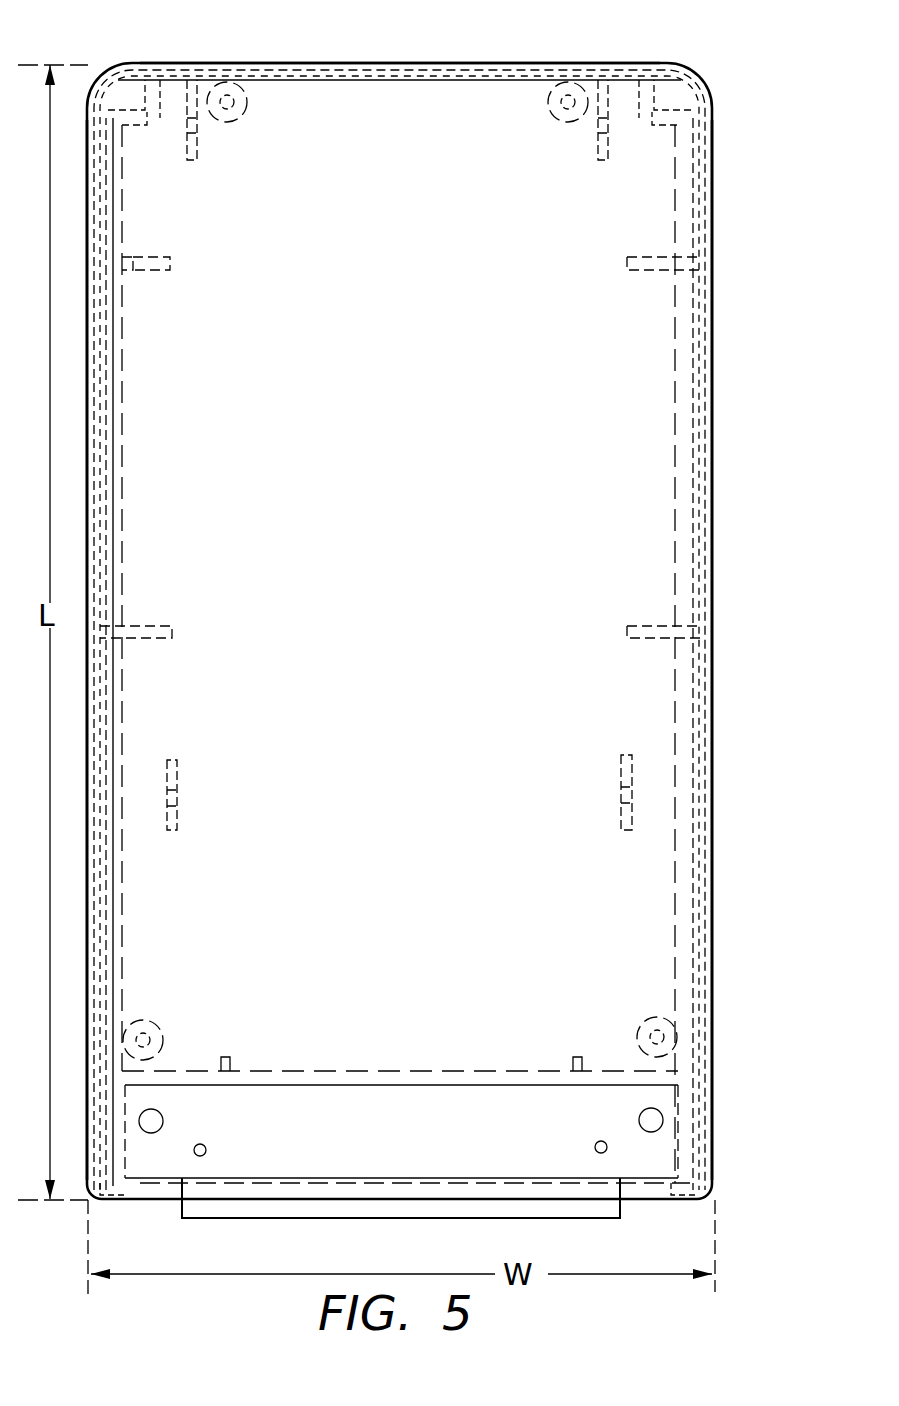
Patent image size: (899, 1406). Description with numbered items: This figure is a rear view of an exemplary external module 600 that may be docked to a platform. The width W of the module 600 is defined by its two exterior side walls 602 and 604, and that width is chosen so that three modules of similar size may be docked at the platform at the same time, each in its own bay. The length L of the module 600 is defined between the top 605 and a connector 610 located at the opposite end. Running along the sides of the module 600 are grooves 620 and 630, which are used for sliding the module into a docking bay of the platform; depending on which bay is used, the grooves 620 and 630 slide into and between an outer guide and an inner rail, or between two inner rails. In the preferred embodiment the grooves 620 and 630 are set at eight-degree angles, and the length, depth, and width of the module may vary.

The external module 600 is at (504, 54).
The top 605 is at (291, 63).
The exterior side wall 602 is at (118, 347).
The exterior side wall 604 is at (702, 353).
The groove 630 is at (127, 498).
The groove 620 is at (676, 424).
The connector 610 is at (283, 1210).